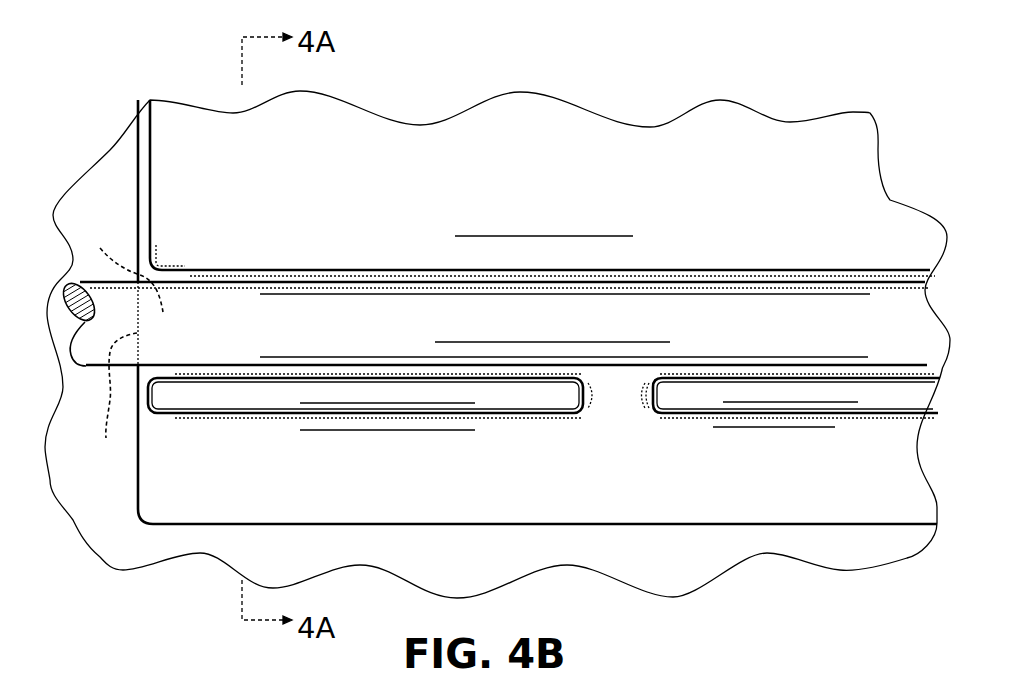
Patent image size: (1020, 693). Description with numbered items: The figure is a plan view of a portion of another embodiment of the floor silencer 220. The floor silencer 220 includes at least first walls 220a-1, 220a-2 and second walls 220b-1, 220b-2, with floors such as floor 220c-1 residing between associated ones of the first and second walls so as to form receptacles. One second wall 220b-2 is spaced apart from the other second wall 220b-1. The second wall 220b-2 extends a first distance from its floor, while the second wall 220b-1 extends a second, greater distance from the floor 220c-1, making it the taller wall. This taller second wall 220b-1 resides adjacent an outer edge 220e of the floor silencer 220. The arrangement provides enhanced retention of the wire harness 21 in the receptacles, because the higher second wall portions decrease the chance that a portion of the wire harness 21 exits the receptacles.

The floor silencer 220 is at (138, 178).
The first wall 220a-1 is at (227, 270).
The first wall 220a-2 is at (728, 270).
The second wall 220b-1 is at (223, 400).
The second wall 220b-2 is at (746, 393).
The floor 220c-1 is at (114, 267).
The outer edge 220e is at (107, 397).
The wire harness 21 is at (93, 347).